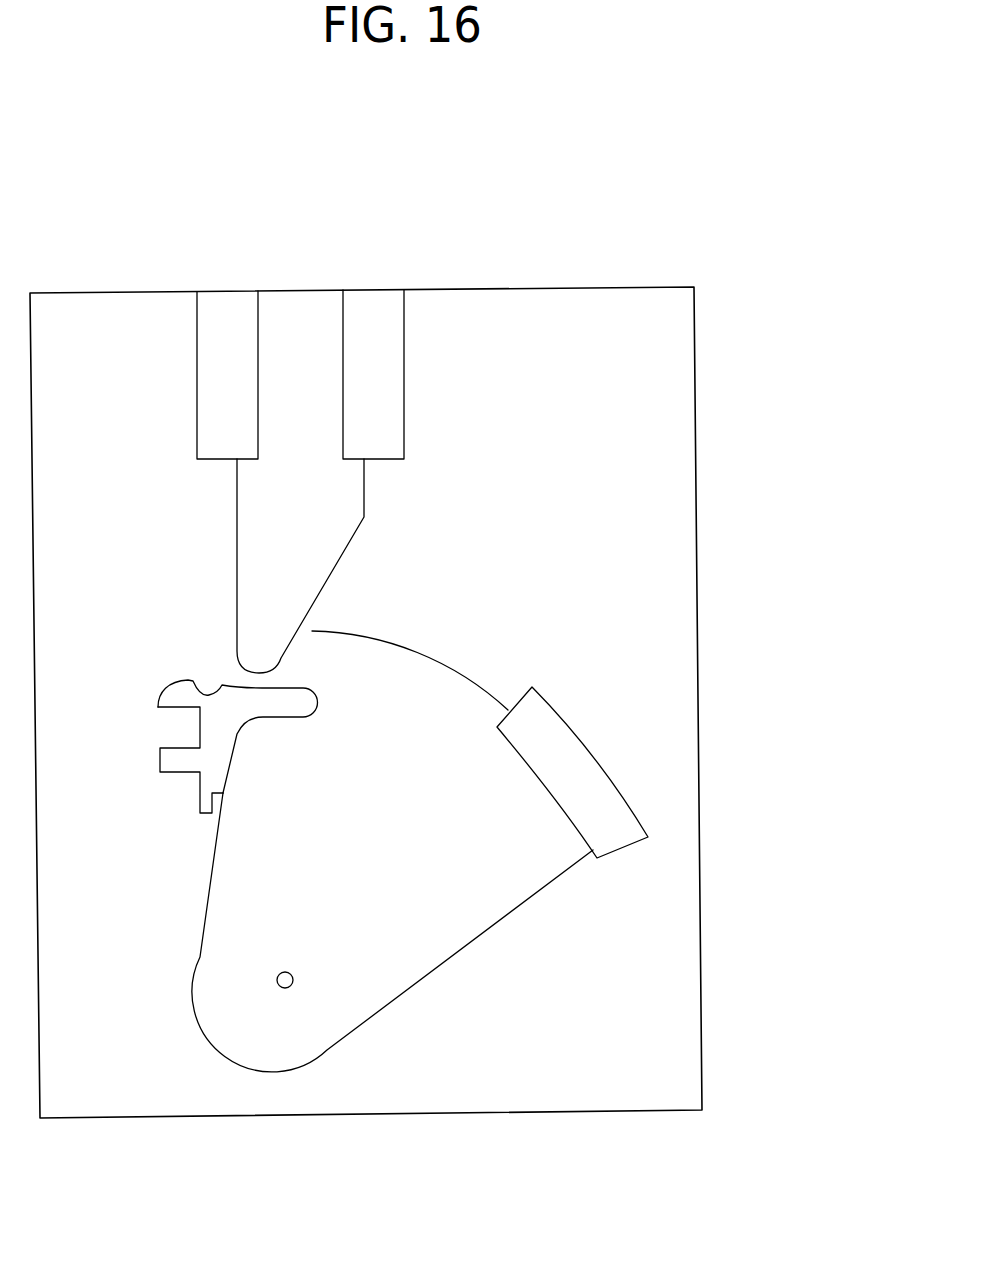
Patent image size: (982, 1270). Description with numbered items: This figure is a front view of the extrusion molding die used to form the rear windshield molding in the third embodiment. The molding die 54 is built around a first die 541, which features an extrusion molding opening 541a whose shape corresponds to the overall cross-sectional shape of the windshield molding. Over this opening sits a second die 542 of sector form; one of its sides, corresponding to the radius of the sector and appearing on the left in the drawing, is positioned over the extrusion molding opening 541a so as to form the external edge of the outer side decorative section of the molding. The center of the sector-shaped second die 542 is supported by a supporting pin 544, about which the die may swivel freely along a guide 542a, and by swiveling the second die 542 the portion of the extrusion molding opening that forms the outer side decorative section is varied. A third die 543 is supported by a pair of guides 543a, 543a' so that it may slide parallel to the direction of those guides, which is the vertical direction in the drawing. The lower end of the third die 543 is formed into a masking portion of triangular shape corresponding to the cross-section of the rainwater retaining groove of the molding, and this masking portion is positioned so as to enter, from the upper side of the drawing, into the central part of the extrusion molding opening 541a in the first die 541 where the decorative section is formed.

The molding die 54 is at (709, 348).
The first die 541 is at (685, 571).
The extrusion molding opening 541a is at (198, 695).
The second die 542 is at (450, 943).
The guide 542a is at (580, 743).
The third die 543 is at (333, 550).
The guide 543a is at (164, 375).
The guide 543a' is at (437, 374).
The supporting pin 544 is at (277, 985).